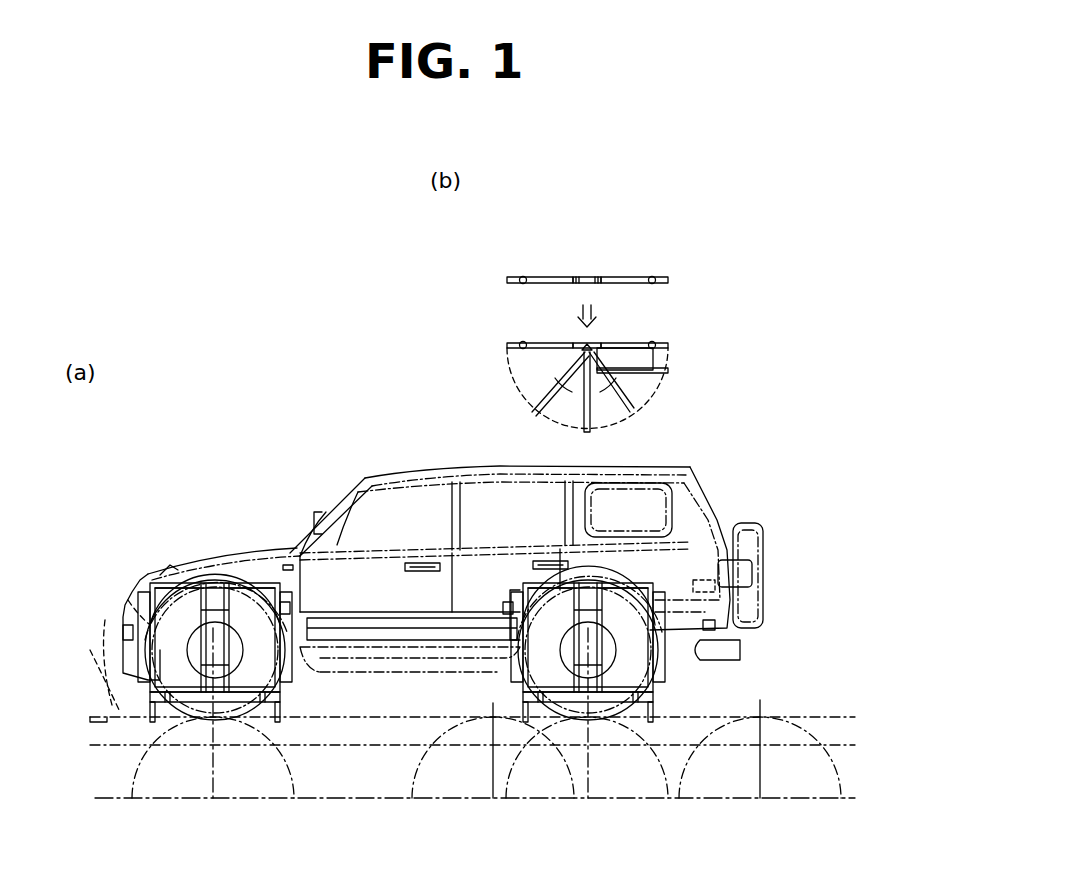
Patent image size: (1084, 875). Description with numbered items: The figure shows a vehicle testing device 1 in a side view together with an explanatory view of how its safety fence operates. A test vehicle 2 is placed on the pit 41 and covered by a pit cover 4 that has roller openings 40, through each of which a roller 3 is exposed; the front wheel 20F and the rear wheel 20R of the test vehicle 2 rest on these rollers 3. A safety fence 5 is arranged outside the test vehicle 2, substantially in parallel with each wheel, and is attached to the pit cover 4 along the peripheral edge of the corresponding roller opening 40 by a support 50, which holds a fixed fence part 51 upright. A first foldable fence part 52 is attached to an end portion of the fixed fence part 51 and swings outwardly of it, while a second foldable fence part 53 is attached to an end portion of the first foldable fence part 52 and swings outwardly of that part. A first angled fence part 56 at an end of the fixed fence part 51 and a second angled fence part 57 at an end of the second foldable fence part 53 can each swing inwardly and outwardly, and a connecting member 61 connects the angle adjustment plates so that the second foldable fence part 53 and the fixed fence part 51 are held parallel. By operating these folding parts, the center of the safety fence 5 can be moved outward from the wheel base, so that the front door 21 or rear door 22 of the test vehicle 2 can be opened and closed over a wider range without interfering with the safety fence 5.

The vehicle testing device 1 is at (318, 412).
The test vehicle 2 is at (333, 500).
The roller 3 is at (138, 768).
The pit cover 4 is at (97, 710).
The roller opening 40 is at (102, 649).
The pit 41 is at (96, 670).
The safety fence 5 is at (173, 460).
The front wheel 20F is at (233, 640).
The rear wheel 20R is at (512, 607).
The front door 21 is at (377, 565).
The rear door 22 is at (455, 520).
The support 50 is at (288, 706).
The fixed fence part 51 is at (178, 583).
The first foldable fence part 52 is at (215, 583).
The second foldable fence part 53 is at (247, 583).
The first angled fence part 56 is at (143, 583).
The second angled fence part 57 is at (287, 585).
The connecting member 61 is at (653, 358).